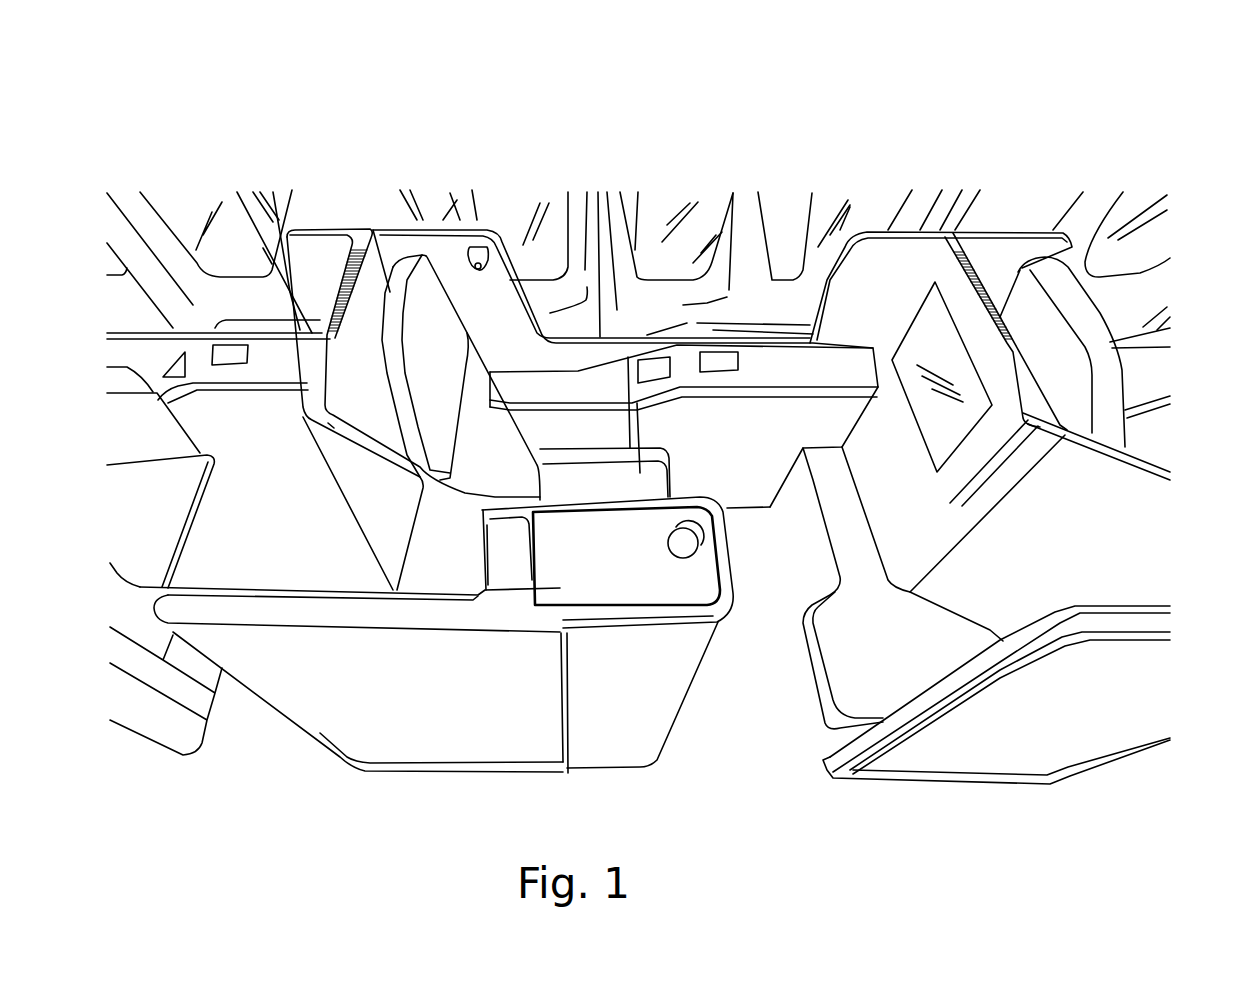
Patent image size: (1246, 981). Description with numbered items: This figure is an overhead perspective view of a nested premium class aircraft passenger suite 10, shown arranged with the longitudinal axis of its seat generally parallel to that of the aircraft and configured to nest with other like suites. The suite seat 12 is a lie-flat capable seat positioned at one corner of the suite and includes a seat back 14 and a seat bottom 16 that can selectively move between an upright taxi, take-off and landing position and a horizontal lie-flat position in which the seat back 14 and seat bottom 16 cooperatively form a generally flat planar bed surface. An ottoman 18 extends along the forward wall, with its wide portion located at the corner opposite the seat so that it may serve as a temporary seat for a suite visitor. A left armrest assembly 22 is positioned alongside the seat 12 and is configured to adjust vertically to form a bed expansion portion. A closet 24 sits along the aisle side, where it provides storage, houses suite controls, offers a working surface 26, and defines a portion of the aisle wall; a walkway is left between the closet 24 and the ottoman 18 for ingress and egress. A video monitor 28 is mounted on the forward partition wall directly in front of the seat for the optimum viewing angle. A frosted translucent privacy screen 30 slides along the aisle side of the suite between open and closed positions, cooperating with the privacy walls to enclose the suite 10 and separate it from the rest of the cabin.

The premium class aircraft passenger suite 10 is at (172, 115).
The suite seat 12 is at (423, 257).
The seat back 14 is at (485, 407).
The seat bottom 16 is at (637, 478).
The ottoman 18 is at (850, 527).
The left armrest assembly 22 is at (576, 383).
The closet 24 is at (707, 657).
The working surface 26 is at (633, 562).
The video monitor 28 is at (938, 327).
The privacy screen 30 is at (296, 608).